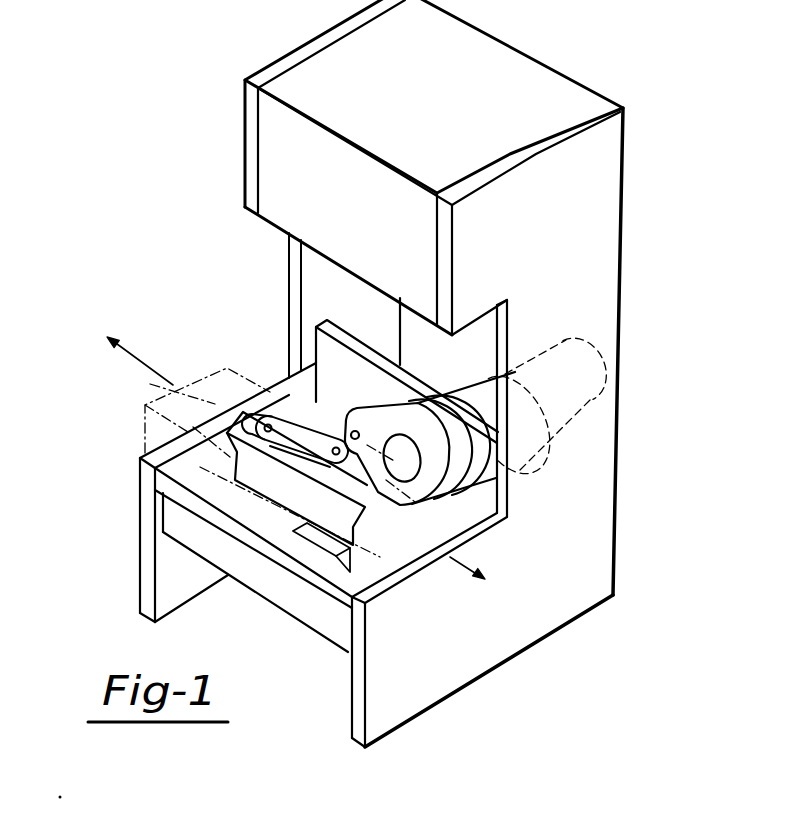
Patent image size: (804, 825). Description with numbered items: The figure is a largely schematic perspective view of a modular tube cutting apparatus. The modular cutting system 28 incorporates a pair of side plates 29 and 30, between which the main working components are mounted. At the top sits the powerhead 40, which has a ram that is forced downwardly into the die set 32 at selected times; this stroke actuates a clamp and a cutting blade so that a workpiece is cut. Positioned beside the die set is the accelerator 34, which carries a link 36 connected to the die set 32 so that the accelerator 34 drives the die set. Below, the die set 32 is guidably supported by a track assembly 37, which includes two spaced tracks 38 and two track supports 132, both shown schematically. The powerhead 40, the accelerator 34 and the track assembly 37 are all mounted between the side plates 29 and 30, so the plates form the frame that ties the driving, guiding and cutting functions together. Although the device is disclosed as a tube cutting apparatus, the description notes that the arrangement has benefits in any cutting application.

The modular cutting system 28 is at (90, 410).
The side plate 29 is at (290, 263).
The side plate 30 is at (613, 278).
The die set 32 is at (205, 388).
The accelerator 34 is at (431, 474).
The link 36 is at (299, 422).
The track assembly 37 is at (178, 518).
The tracks 38 is at (392, 538).
The powerhead 40 is at (366, 202).
The track supports 132 is at (333, 532).